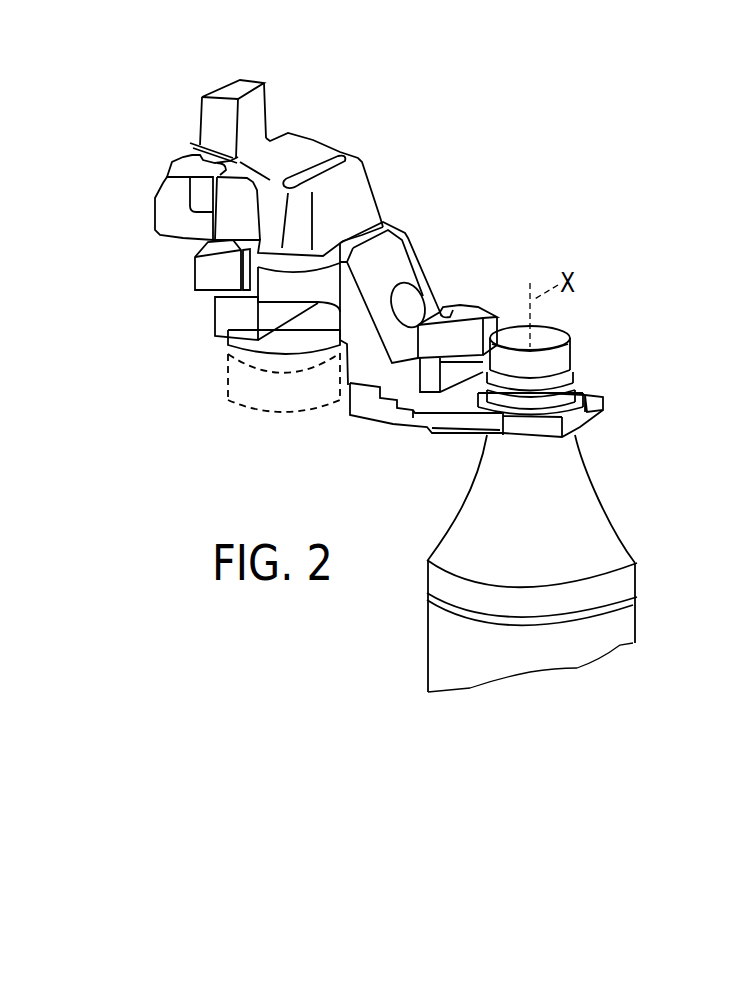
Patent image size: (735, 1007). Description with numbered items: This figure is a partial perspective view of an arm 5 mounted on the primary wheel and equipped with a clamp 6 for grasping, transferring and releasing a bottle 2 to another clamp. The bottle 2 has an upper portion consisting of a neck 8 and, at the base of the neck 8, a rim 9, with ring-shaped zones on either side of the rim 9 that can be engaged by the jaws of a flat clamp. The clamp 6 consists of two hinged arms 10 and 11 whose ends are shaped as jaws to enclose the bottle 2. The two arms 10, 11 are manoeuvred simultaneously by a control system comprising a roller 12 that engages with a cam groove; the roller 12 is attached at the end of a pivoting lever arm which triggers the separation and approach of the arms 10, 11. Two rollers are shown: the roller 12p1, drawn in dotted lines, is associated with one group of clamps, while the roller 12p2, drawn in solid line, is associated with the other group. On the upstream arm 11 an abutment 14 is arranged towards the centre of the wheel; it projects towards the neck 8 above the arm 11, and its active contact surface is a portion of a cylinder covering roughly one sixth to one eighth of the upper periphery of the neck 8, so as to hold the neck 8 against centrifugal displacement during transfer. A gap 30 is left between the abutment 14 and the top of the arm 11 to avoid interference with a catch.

The bottle 2 is at (577, 512).
The arm 5 is at (412, 234).
The clamp 6 is at (410, 418).
The neck 8 is at (558, 360).
The rim 9 is at (582, 388).
The hinged arm 10 is at (450, 433).
The hinged arm 11 is at (602, 411).
The roller 12 is at (272, 343).
The roller 12p1 is at (252, 404).
The roller 12p2 is at (283, 335).
The abutment 14 is at (462, 315).
The gap 30 is at (455, 372).